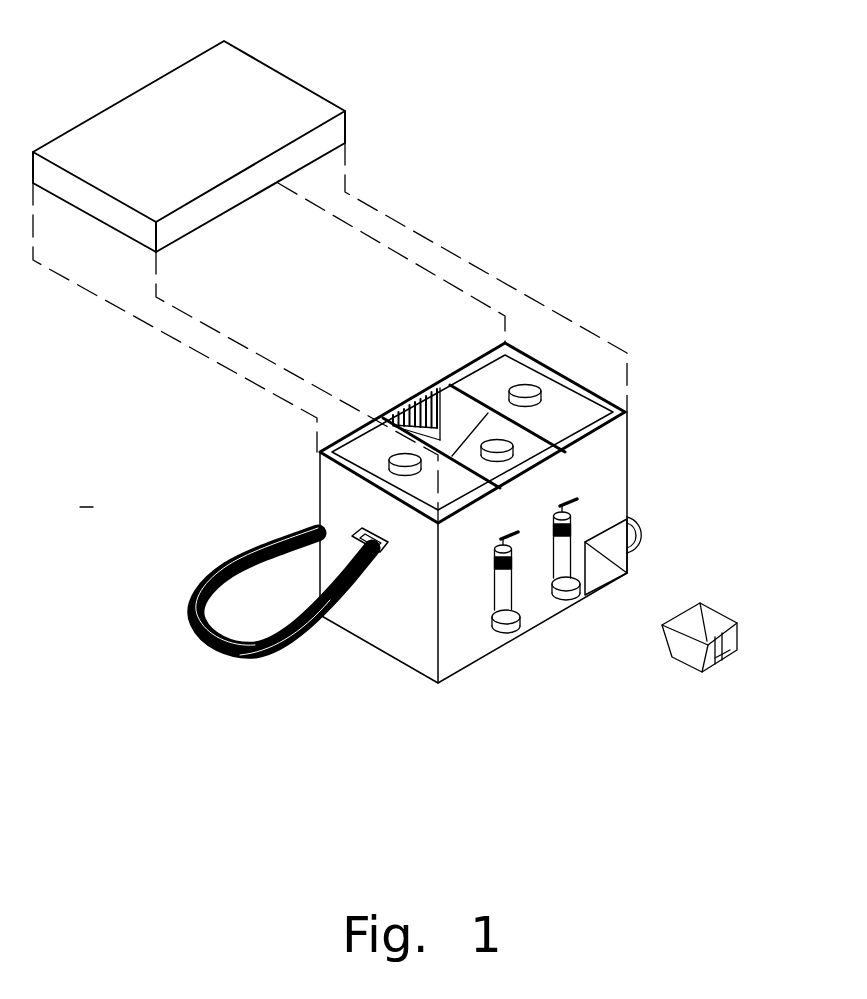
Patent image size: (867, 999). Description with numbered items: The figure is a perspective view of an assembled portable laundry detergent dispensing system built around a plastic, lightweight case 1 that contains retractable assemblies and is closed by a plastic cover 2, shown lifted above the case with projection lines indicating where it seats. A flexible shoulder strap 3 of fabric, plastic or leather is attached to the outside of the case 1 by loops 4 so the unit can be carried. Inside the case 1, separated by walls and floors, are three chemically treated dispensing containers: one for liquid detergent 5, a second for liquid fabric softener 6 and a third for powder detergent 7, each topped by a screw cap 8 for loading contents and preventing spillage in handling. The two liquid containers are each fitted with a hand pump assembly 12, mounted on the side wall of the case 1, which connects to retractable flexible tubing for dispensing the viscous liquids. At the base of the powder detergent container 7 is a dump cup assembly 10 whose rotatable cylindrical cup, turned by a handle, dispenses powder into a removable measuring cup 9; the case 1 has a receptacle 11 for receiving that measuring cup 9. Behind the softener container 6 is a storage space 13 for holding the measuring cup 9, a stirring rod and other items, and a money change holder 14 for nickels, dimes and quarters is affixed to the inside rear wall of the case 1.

The case 1 is at (518, 505).
The cover 2 is at (330, 264).
The shoulder strap 3 is at (276, 571).
The loops 4 is at (310, 673).
The liquid detergent container 5 is at (284, 427).
The liquid fabric softener container 6 is at (562, 380).
The powder detergent container 7 is at (509, 299).
The screw caps 8 is at (541, 338).
The measuring cup 9 is at (717, 578).
The dump cup assembly 10 is at (673, 484).
The receptacle 11 is at (661, 676).
The hand pump assembly 12 is at (495, 660).
The storage space 13 is at (490, 302).
The money change holder 14 is at (487, 265).